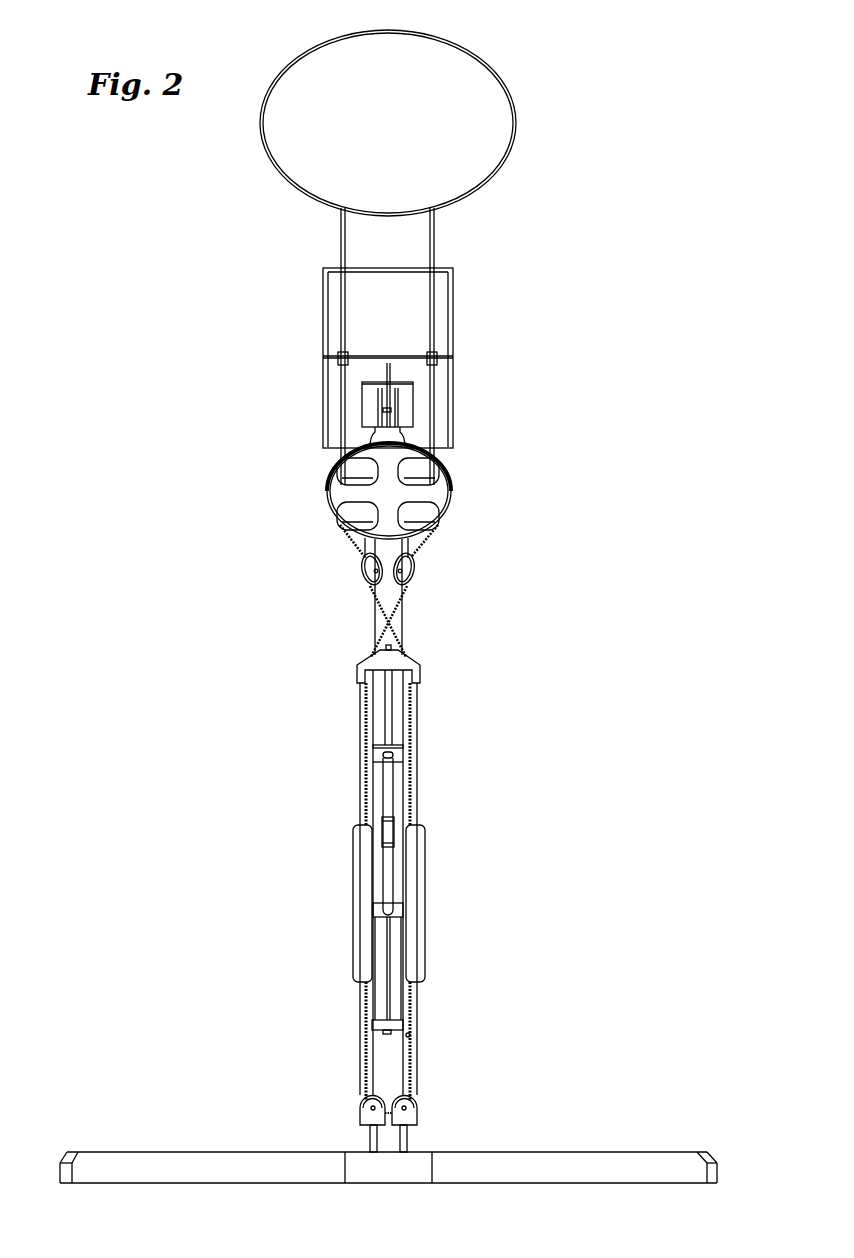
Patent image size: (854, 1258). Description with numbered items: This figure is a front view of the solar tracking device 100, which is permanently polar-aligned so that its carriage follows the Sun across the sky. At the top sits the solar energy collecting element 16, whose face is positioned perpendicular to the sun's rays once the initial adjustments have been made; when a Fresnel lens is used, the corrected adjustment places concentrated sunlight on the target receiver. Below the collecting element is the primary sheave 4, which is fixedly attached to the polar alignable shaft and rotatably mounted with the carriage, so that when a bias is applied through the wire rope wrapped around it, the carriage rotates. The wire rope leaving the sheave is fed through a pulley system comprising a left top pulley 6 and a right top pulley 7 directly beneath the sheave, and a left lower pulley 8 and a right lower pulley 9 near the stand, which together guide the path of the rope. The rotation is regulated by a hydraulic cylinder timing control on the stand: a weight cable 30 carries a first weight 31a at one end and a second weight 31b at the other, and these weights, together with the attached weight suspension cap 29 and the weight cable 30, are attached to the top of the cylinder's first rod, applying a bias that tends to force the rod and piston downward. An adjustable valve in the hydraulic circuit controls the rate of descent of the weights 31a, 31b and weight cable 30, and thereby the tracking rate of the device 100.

The device 100 is at (598, 135).
The solar energy collecting element 16 is at (453, 70).
The primary sheave 4 is at (325, 500).
The left top pulley 6 is at (360, 572).
The right top pulley 7 is at (416, 572).
The weight suspension cap 29 is at (416, 664).
The weight cable 30 is at (418, 752).
The first weight 31a is at (414, 862).
The second weight 31b is at (355, 893).
The left lower pulley 8 is at (358, 1105).
The right lower pulley 9 is at (420, 1104).